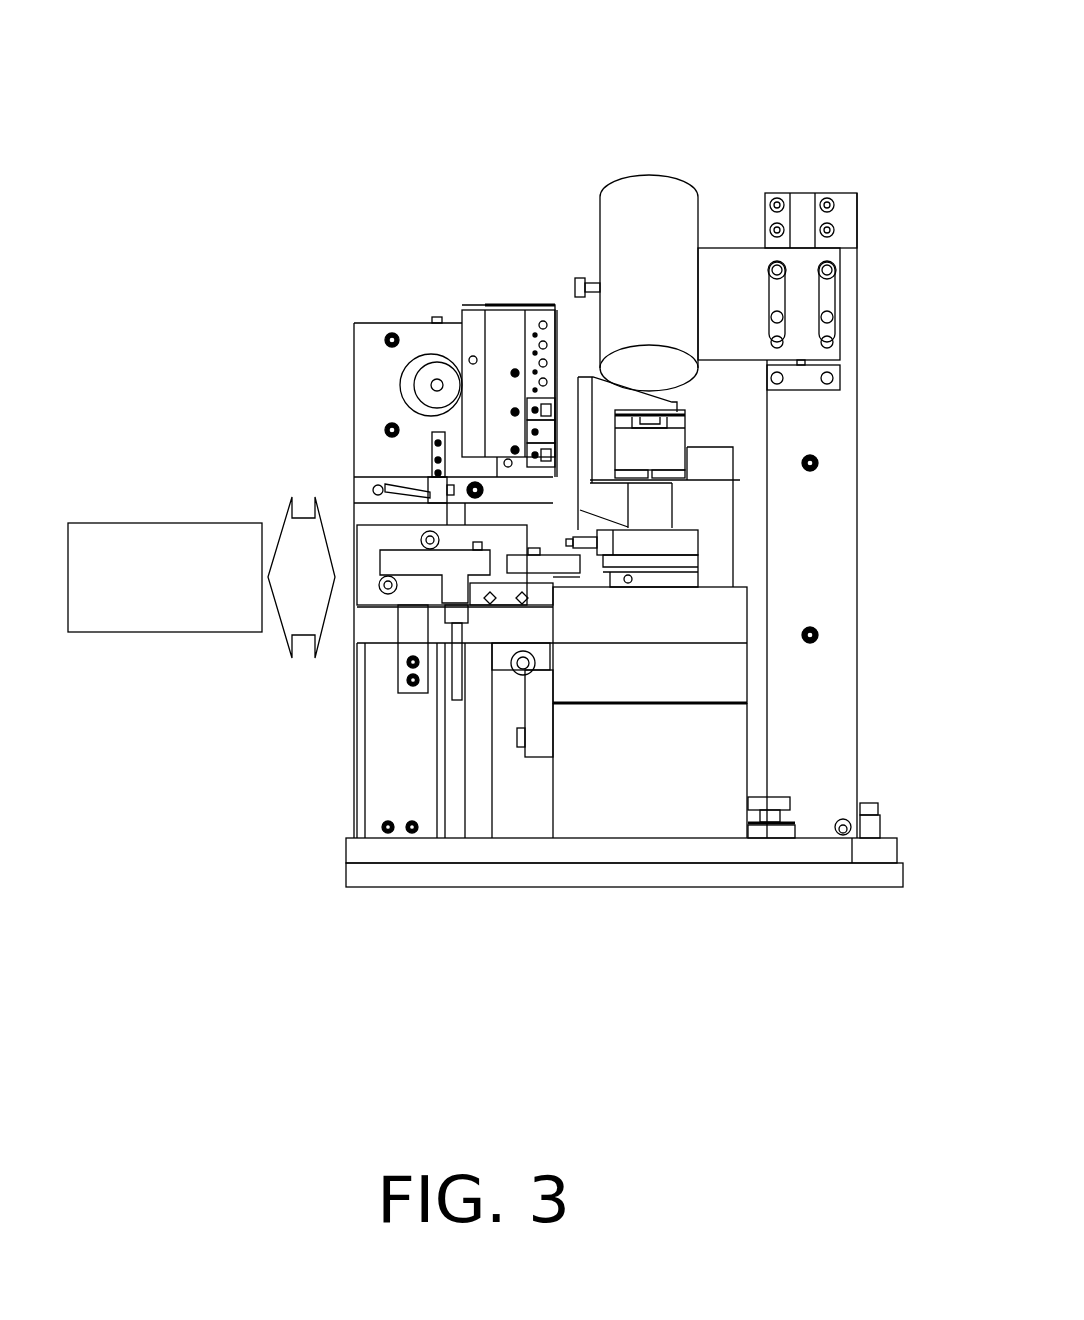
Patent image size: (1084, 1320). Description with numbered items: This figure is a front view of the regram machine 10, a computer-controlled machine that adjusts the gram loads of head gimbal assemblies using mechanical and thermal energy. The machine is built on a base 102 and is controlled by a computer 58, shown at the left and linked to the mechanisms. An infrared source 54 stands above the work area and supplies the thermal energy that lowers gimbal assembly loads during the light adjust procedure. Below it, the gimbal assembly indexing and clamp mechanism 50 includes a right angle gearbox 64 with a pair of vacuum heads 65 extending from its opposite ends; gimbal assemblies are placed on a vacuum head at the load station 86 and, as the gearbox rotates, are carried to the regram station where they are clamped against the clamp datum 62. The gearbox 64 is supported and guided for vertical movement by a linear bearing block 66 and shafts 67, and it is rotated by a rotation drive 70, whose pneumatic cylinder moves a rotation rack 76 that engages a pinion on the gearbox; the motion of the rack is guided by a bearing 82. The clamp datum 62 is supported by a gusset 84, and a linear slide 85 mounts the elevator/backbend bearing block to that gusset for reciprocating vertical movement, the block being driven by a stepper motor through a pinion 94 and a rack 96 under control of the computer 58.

The regram machine 10 is at (317, 285).
The gimbal assembly indexing and clamp mechanism 50 is at (692, 483).
The infrared source 54 is at (640, 197).
The computer 58 is at (157, 637).
The clamp datum 62 is at (717, 447).
The right angle gearbox 64 is at (655, 427).
The vacuum heads 65 is at (642, 413).
The linear bearing block 66 is at (647, 777).
The shafts 67 is at (688, 710).
The rotation drive 70 is at (387, 542).
The rotation rack 76 is at (597, 577).
The bearing 82 is at (508, 598).
The gusset 84 is at (750, 560).
The linear slide 85 is at (527, 307).
The load station 86 is at (693, 413).
The pinion 94 is at (422, 372).
The rack 96 is at (462, 308).
The base 102 is at (400, 853).